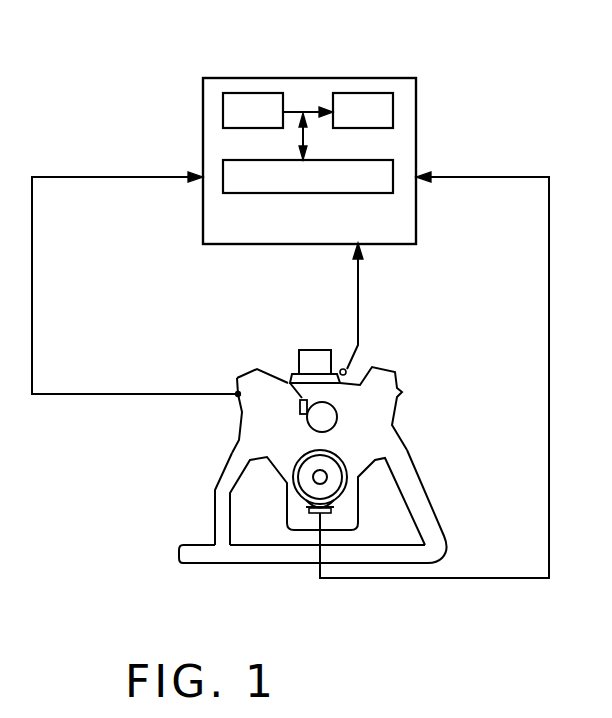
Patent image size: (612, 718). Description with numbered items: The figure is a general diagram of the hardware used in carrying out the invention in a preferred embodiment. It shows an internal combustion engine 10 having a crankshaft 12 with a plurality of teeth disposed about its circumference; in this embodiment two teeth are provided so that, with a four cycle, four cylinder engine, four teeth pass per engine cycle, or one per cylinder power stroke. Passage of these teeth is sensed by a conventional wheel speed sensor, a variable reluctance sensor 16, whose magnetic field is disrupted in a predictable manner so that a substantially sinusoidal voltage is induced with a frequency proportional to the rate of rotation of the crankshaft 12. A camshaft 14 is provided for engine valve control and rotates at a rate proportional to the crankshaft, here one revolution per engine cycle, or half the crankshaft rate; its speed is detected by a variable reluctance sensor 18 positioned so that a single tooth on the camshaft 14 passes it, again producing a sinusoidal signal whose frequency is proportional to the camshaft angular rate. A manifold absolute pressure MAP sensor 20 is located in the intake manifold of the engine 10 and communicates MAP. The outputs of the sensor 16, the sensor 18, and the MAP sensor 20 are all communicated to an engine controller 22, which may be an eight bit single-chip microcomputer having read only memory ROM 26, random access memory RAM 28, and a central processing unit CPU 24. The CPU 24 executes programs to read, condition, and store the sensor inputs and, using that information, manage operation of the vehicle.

The internal combustion engine 10 is at (413, 414).
The crankshaft 12 is at (272, 481).
The camshaft 14 is at (334, 418).
The variable reluctance sensor 16 is at (304, 527).
The variable reluctance sensor 18 is at (288, 382).
The manifold absolute pressure MAP sensor 20 is at (347, 371).
The engine controller 22 is at (329, 72).
The central processing unit CPU 24 is at (223, 185).
The read only memory ROM 26 is at (223, 119).
The random access memory RAM 28 is at (393, 108).